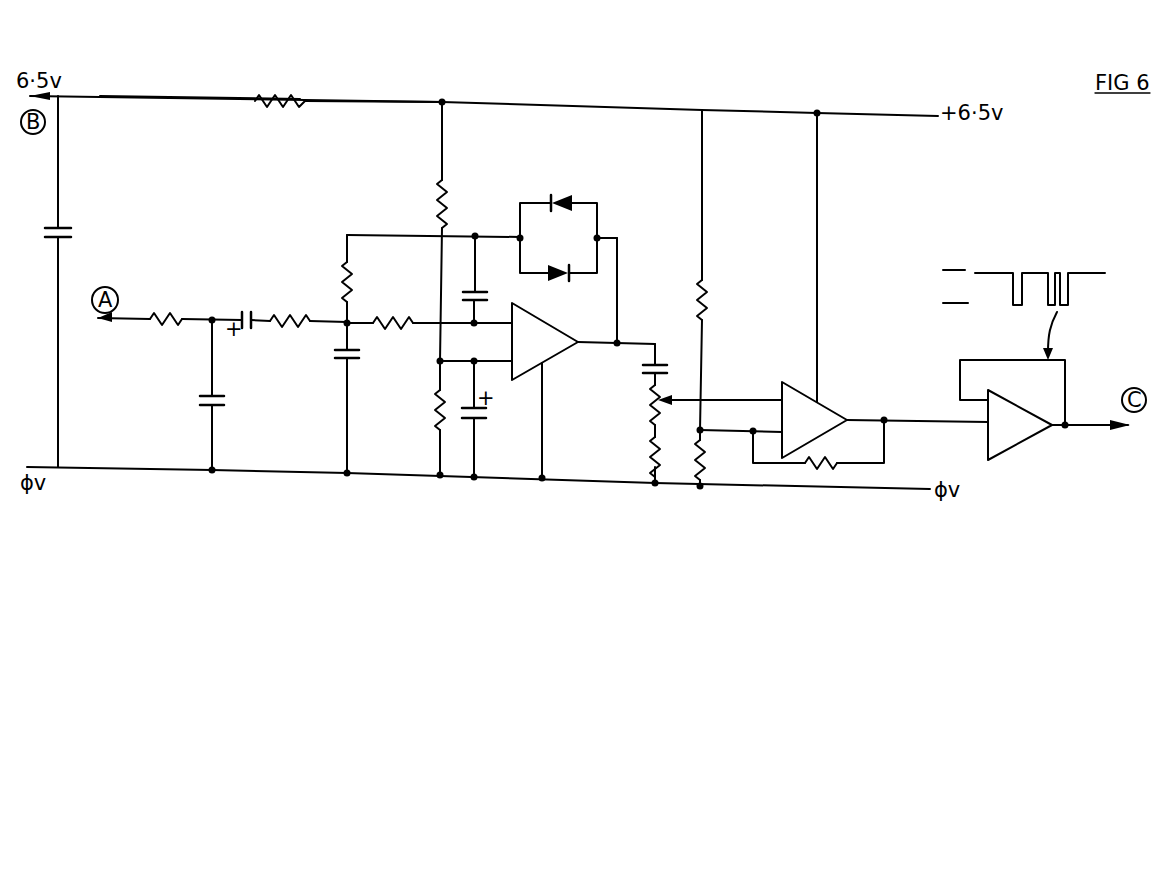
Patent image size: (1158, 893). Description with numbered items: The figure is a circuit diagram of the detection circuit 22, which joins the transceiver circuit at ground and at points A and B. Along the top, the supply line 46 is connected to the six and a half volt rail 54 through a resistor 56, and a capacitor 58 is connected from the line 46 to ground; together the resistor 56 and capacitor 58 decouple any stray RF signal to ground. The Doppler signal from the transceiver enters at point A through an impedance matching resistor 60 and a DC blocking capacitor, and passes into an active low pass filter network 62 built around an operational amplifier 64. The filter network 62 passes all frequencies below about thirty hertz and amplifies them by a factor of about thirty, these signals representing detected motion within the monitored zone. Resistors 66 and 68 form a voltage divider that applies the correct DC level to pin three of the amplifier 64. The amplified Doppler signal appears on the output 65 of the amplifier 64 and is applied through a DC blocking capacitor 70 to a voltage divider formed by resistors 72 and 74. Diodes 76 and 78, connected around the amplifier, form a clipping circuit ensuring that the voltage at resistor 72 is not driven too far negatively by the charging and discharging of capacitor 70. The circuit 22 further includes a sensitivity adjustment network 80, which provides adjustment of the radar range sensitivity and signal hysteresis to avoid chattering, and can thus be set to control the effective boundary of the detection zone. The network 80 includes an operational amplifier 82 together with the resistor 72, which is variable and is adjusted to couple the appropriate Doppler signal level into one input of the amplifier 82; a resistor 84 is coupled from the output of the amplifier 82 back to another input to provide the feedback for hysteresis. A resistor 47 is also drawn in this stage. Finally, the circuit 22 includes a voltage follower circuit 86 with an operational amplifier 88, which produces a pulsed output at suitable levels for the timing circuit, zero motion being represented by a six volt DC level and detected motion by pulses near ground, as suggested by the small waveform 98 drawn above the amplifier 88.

The detection circuit 22 is at (446, 60).
The supply line 46 is at (183, 97).
The resistor 47 is at (714, 458).
The 6.5 volt rail 54 is at (362, 102).
The resistor 56 is at (290, 105).
The capacitor 58 is at (62, 238).
The impedance matching resistor 60 is at (152, 318).
The active low pass filter network 62 is at (205, 413).
The operational amplifier 64 is at (571, 329).
The output 65 is at (592, 347).
The resistor 66 is at (446, 188).
The resistor 68 is at (436, 398).
The DC blocking capacitor 70 is at (660, 366).
The resistor 72 is at (650, 408).
The resistor 74 is at (652, 456).
The diode 76 is at (571, 206).
The diode 78 is at (566, 268).
The sensitivity adjustment network 80 is at (887, 503).
The operational amplifier 82 is at (850, 409).
The resistor 84 is at (838, 467).
The voltage follower circuit 86 is at (1045, 518).
The operational amplifier 88 is at (1035, 409).
The output waveform 98 is at (1090, 272).